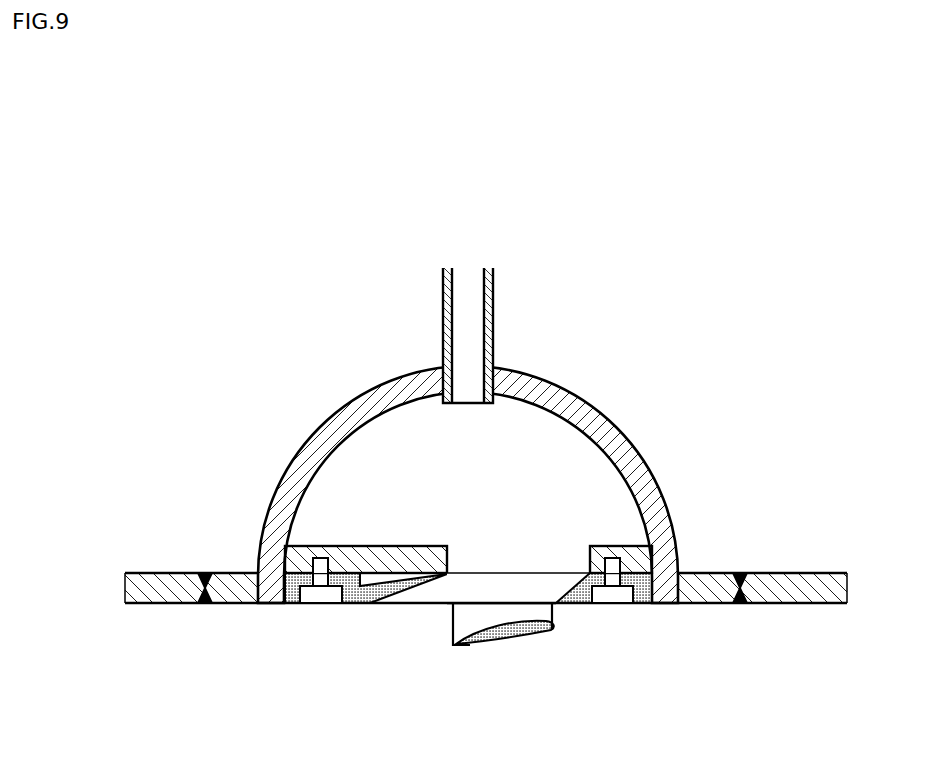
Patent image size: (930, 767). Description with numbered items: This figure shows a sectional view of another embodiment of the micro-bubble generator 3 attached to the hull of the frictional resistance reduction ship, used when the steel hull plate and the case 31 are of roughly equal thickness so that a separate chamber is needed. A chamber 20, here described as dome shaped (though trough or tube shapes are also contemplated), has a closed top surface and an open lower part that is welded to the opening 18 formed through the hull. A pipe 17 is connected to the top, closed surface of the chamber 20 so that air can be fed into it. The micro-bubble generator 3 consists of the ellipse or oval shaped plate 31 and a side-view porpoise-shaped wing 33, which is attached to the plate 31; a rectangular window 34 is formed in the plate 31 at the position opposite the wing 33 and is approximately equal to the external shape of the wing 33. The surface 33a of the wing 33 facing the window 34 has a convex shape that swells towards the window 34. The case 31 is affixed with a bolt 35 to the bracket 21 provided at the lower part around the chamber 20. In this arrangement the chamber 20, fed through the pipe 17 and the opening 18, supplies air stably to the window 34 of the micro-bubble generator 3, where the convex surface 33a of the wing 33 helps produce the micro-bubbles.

The micro-bubble generator 3 is at (508, 683).
The pipe 17 is at (443, 305).
The opening 18 is at (207, 603).
The chamber 20 is at (325, 424).
The bracket 21 is at (365, 555).
The plate 31 is at (354, 604).
The wing 33 is at (508, 654).
The surface 33a is at (500, 622).
The window 34 is at (507, 584).
The bolt 35 is at (618, 605).